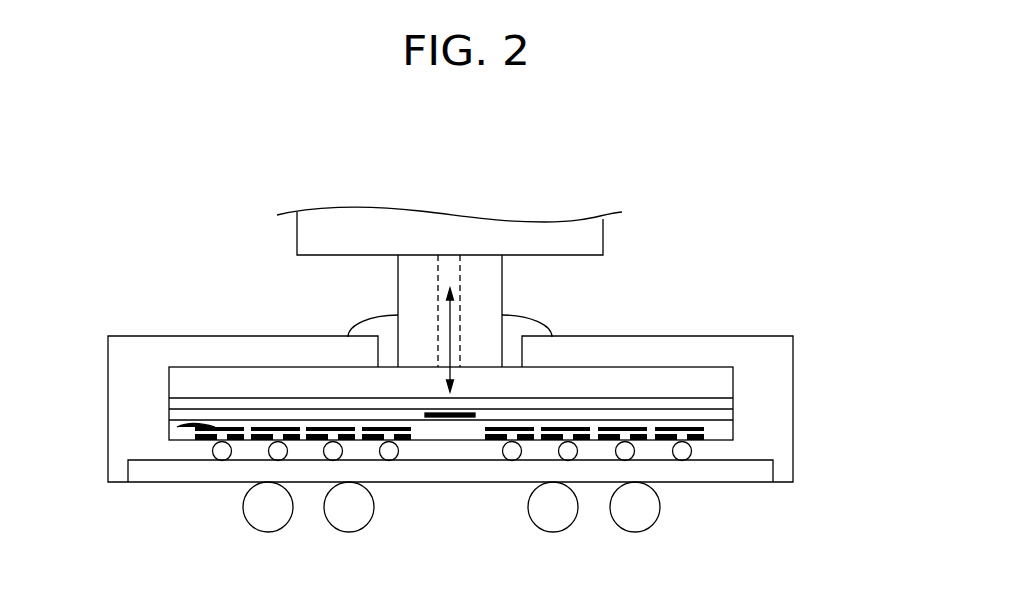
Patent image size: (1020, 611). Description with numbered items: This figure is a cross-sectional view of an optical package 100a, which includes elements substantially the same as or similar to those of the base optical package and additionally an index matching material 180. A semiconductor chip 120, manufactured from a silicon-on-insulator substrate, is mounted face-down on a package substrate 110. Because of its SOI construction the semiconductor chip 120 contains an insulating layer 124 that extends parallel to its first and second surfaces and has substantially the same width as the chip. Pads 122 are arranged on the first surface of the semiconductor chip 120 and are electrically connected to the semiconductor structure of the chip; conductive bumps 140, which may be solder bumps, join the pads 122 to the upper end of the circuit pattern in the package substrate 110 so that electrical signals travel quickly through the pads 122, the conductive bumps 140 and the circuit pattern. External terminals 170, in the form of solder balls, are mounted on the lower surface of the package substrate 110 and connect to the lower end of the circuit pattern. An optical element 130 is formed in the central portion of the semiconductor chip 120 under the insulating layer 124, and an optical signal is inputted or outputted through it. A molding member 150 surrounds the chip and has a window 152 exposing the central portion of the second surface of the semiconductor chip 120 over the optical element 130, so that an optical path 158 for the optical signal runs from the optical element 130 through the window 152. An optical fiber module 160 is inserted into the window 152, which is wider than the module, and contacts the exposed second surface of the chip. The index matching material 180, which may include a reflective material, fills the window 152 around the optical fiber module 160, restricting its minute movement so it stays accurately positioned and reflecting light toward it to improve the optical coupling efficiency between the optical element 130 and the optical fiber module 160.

The optical package 100a is at (471, 180).
The package substrate 110 is at (768, 470).
The semiconductor chip 120 is at (726, 379).
The pads 122 is at (172, 427).
The insulating layer 124 is at (726, 404).
The optical element 130 is at (450, 417).
The conductive bumps 140 is at (710, 452).
The molding member 150 is at (781, 353).
The window 152 is at (388, 354).
The optical path 158 is at (453, 356).
The optical fiber module 160 is at (398, 271).
The external terminals 170 is at (645, 512).
The index matching material 180 is at (527, 327).